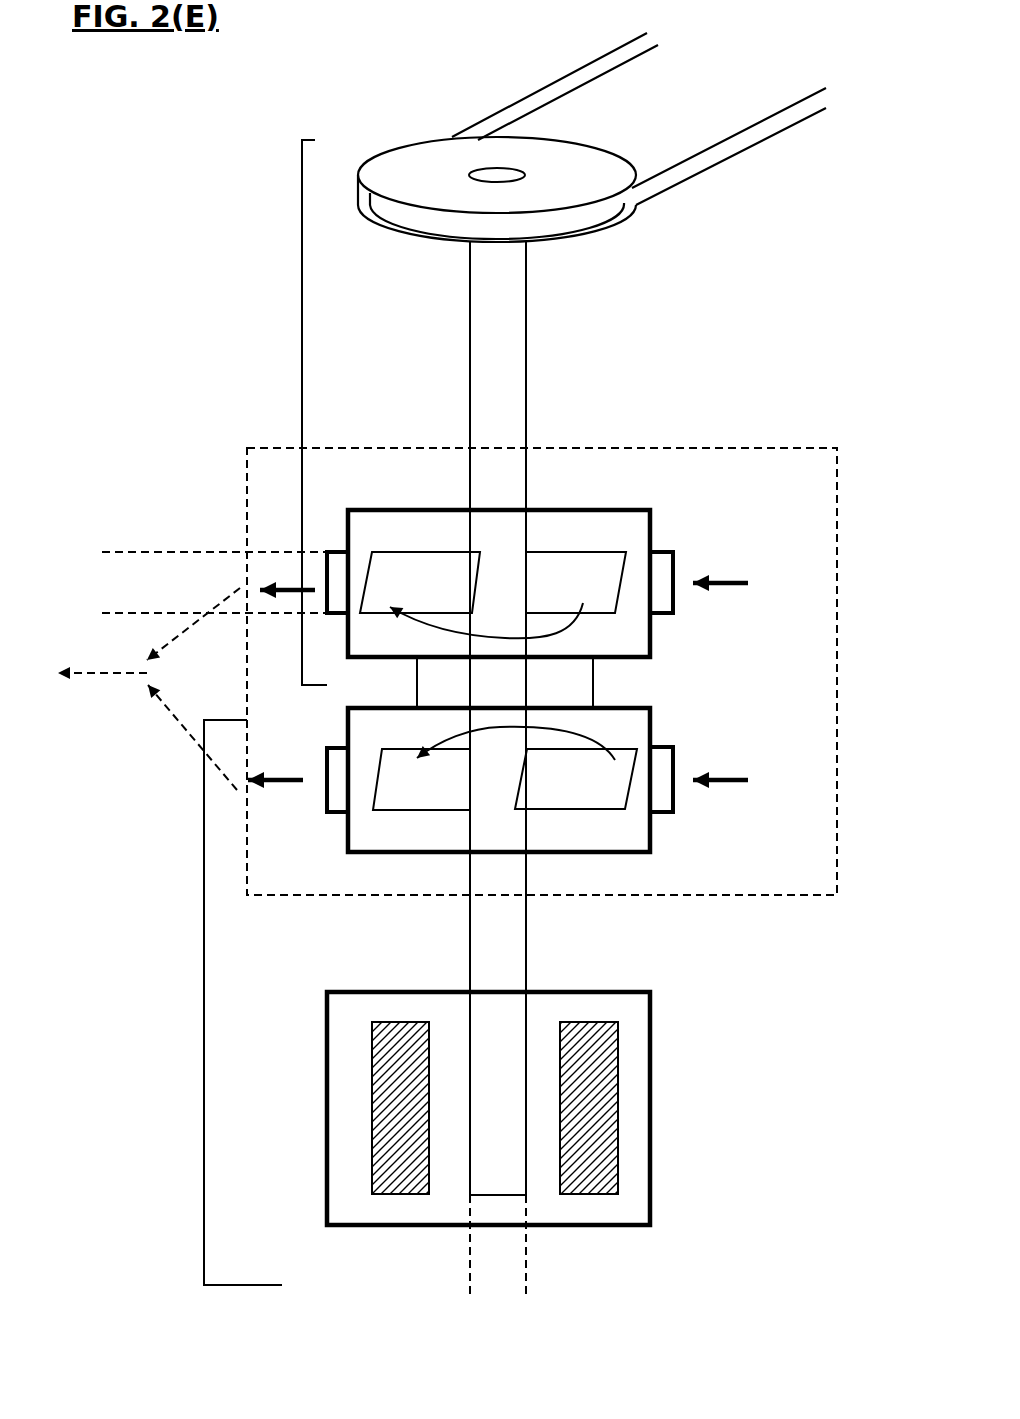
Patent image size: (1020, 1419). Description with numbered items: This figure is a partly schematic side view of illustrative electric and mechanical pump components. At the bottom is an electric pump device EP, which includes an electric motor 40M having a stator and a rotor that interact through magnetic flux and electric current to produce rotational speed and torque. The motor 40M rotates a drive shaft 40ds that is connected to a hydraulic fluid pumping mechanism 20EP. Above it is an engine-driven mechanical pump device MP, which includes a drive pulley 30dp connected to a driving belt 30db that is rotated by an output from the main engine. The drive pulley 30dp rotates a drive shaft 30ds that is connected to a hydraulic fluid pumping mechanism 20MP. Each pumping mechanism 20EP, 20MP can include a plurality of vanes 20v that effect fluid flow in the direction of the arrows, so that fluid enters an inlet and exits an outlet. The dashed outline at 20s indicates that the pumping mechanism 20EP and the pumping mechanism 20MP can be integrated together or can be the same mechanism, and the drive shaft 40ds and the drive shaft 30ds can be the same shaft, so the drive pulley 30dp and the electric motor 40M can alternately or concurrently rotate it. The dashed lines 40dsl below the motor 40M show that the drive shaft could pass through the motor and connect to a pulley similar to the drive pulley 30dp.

The driving belt 30db is at (522, 97).
The drive pulley 30dp is at (425, 158).
The drive shaft 30ds is at (480, 367).
The drive shaft 40ds is at (493, 912).
The dashed lines 40dsl is at (527, 1265).
The electric motor 40M is at (278, 1220).
The engine-driven mechanical pump device MP is at (302, 378).
The electric pump device EP is at (204, 973).
The hydraulic fluid pumping mechanism 20MP is at (592, 505).
The hydraulic fluid pumping mechanism 20EP is at (582, 853).
The vanes 20v is at (437, 568).
The integrated pumping mechanism 20s is at (247, 760).